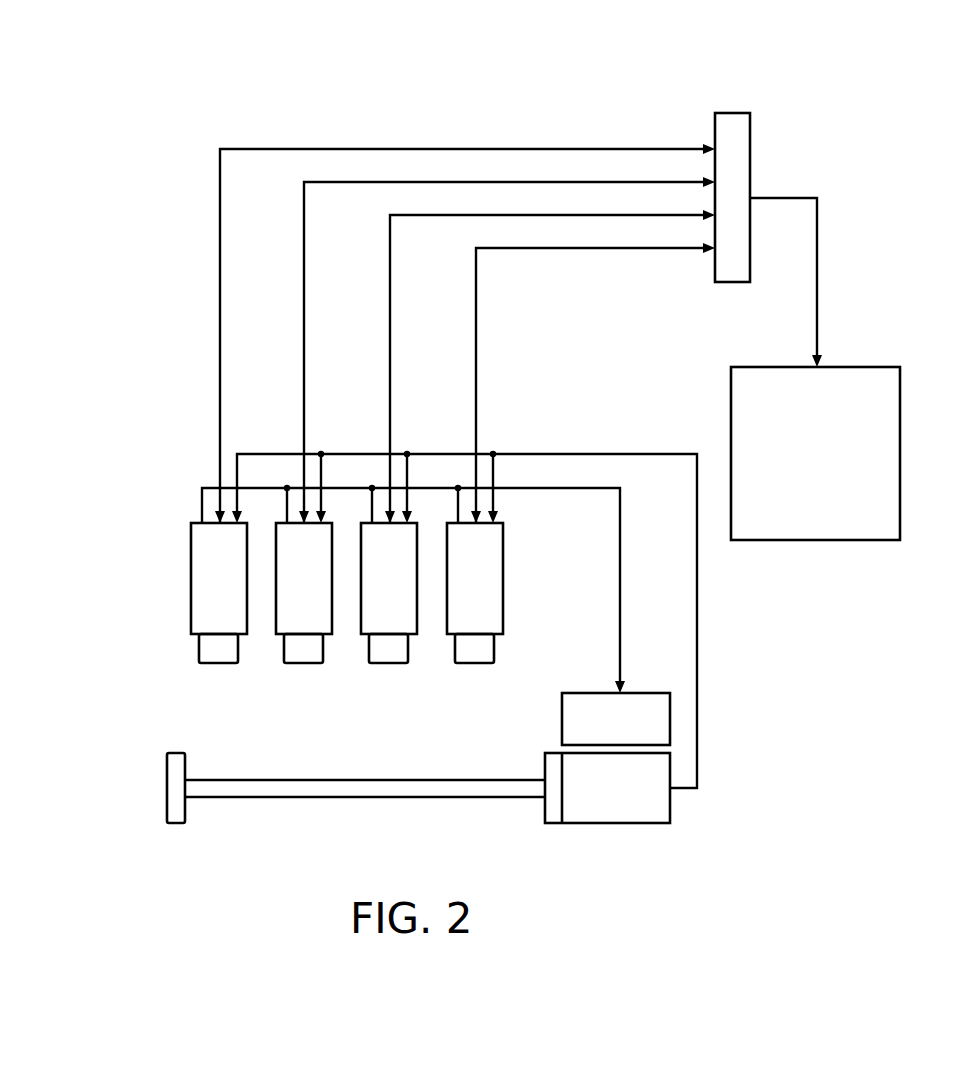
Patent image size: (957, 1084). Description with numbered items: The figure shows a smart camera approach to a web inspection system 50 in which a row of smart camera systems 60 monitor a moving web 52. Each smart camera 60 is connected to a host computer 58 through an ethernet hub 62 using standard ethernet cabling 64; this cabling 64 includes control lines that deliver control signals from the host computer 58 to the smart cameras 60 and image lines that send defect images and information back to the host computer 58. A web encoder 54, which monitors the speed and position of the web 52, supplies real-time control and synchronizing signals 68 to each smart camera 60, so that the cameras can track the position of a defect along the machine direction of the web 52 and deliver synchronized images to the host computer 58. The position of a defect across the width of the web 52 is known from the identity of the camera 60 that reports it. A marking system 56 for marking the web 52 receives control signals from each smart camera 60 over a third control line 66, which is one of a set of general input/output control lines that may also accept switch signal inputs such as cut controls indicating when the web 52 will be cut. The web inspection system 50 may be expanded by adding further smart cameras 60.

The web inspection system 50 is at (533, 525).
The web 52 is at (283, 798).
The web encoder 54 is at (593, 823).
The marking system 56 is at (600, 693).
The host computer 58 is at (815, 540).
The smart camera systems 60 is at (503, 549).
The ethernet hub 62 is at (730, 282).
The ethernet cabling 64 is at (477, 273).
The third control line 66 is at (622, 598).
The control and synchronizing signals 68 is at (697, 598).